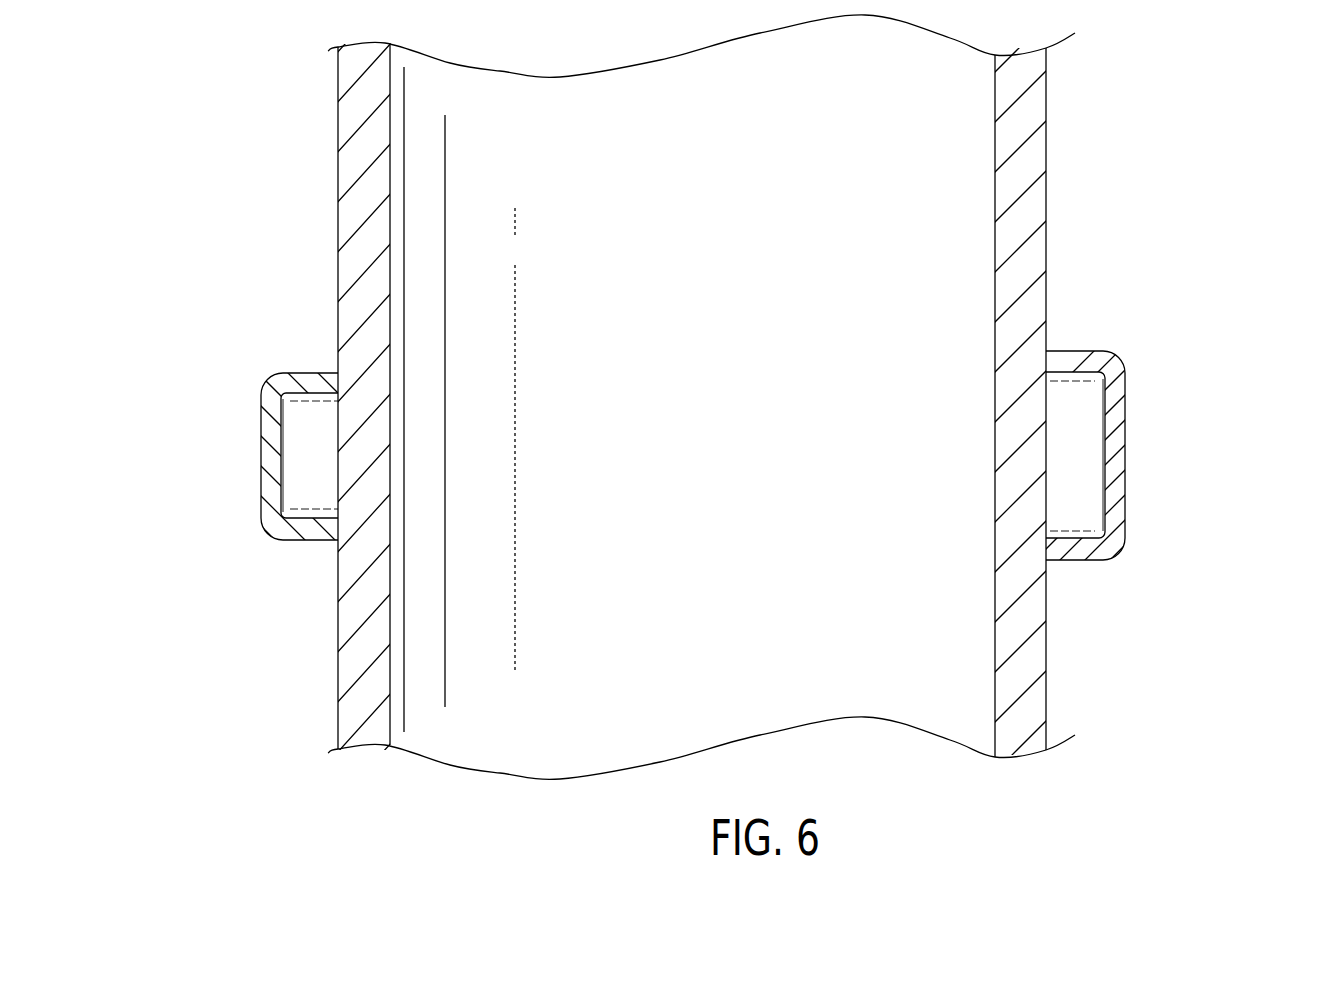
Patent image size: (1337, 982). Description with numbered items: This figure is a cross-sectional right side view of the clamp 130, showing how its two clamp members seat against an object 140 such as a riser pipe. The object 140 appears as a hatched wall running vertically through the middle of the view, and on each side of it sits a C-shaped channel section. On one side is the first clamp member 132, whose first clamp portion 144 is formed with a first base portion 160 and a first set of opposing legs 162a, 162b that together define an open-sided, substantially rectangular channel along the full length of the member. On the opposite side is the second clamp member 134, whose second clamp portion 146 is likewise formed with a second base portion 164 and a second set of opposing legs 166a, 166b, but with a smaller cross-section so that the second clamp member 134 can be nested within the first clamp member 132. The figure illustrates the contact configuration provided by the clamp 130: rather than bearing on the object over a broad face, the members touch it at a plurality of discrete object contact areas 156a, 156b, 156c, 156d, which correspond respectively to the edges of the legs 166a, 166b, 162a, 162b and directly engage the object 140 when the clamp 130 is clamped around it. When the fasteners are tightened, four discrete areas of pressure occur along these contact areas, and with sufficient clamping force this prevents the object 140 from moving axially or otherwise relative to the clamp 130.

The clamp 130 is at (1202, 266).
The first clamp member 132 is at (261, 487).
The second clamp member 134 is at (1121, 550).
The object 140 is at (1047, 104).
The first clamp portion 144 is at (1090, 420).
The second clamp portion 146 is at (295, 423).
The object contact area 156a is at (335, 362).
The object contact area 156b is at (335, 550).
The object contact area 156c is at (1050, 338).
The object contact area 156d is at (1050, 569).
The first base portion 160 is at (1106, 470).
The first leg 162a is at (1083, 351).
The first leg 162b is at (1078, 551).
The second base portion 164 is at (281, 465).
The second leg 166a is at (313, 382).
The second leg 166b is at (308, 527).